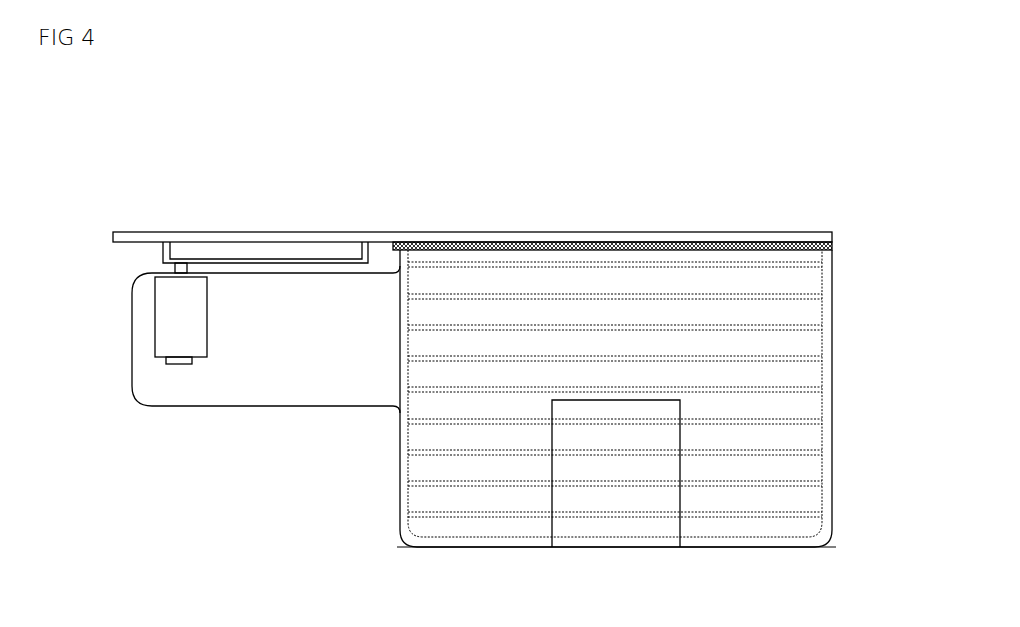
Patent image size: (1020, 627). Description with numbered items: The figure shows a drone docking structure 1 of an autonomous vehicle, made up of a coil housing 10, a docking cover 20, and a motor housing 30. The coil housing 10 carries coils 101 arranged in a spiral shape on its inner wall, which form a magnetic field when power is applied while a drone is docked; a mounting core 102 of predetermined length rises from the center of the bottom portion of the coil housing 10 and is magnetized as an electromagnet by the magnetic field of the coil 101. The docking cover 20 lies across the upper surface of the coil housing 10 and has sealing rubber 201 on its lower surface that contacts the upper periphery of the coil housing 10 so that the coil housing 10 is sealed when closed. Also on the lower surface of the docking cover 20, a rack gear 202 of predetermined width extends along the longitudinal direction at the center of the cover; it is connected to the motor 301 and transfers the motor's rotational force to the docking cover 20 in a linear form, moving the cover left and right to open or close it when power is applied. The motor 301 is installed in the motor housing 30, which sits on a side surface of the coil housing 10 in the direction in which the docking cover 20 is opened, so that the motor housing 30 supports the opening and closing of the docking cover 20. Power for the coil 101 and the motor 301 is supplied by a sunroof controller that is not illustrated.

The drone docking structure 1 is at (773, 162).
The coil housing 10 is at (400, 533).
The coil 101 is at (800, 450).
The mounting core 102 is at (613, 502).
The docking cover 20 is at (418, 232).
The sealing rubber 201 is at (835, 241).
The rack gear 202 is at (260, 262).
The motor housing 30 is at (262, 407).
The motor 301 is at (163, 316).